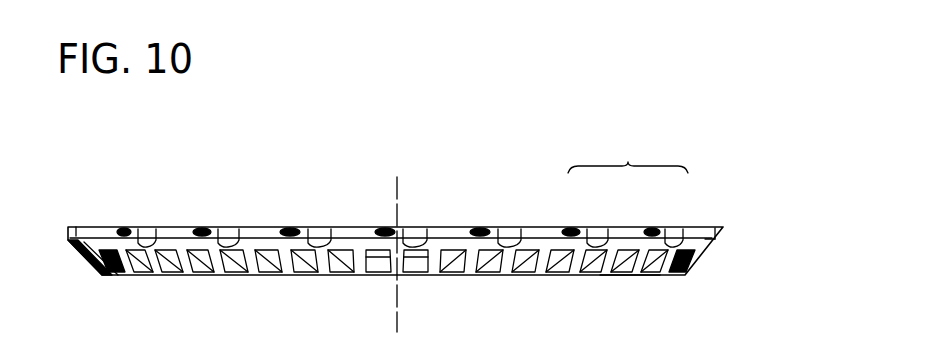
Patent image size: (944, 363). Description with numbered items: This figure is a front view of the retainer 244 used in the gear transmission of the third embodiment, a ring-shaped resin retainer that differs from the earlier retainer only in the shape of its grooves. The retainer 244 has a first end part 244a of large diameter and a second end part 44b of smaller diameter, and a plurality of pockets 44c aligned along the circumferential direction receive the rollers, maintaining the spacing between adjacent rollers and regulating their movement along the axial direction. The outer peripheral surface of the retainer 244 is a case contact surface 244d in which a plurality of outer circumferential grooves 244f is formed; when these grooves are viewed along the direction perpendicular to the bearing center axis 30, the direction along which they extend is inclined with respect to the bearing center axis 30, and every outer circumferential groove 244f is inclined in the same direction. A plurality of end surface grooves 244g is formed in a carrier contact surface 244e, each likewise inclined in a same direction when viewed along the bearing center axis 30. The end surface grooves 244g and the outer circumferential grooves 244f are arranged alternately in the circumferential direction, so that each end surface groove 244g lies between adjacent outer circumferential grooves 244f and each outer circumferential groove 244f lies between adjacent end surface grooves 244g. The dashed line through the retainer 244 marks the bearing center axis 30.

The retainer 244 is at (755, 140).
The first end part 244a is at (628, 153).
The case contact surface 244d is at (641, 232).
The carrier contact surface 244e is at (622, 229).
The outer circumferential grooves 244f is at (517, 237).
The end surface grooves 244g is at (489, 229).
The second end part 44b is at (627, 277).
The pockets 44c is at (553, 263).
The bearing center axis 30 is at (399, 318).